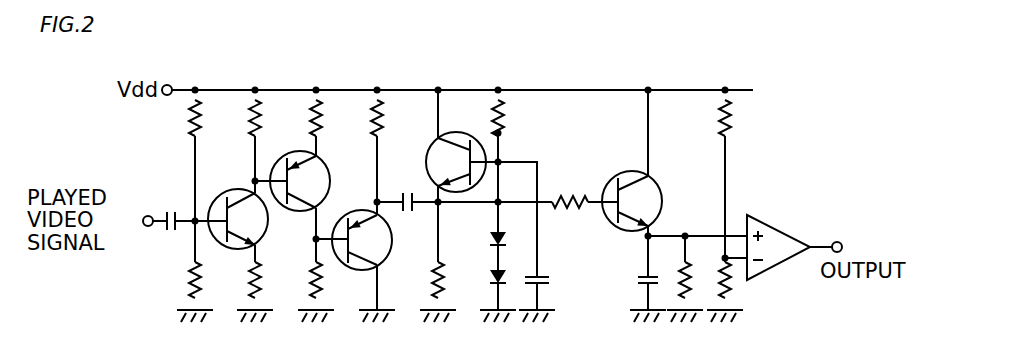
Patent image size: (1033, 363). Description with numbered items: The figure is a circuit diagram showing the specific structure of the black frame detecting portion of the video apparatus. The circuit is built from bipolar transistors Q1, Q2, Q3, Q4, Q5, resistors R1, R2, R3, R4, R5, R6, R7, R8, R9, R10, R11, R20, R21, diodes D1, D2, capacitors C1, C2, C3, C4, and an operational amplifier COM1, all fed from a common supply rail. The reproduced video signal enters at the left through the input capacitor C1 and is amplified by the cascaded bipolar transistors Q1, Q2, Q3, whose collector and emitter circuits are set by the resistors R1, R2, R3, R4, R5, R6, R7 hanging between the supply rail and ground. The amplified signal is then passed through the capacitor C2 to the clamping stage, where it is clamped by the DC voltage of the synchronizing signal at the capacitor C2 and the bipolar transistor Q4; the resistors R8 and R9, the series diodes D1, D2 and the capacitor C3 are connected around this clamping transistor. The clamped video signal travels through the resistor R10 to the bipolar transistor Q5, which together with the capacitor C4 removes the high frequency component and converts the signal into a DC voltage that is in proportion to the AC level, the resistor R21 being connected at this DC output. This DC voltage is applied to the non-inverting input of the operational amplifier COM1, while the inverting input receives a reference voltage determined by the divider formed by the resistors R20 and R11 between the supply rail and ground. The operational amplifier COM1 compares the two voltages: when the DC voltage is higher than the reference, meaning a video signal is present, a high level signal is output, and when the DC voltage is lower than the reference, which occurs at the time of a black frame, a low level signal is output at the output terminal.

The resistor R1 is at (212, 118).
The resistor R2 is at (212, 280).
The resistor R3 is at (272, 118).
The resistor R4 is at (272, 280).
The resistor R5 is at (333, 118).
The resistor R6 is at (333, 280).
The resistor R7 is at (394, 118).
The resistor R8 is at (422, 280).
The resistor R9 is at (515, 118).
The resistor R10 is at (568, 188).
The resistor R11 is at (748, 282).
The resistor R20 is at (750, 118).
The resistor R21 is at (693, 269).
The capacitor C1 is at (164, 208).
The capacitor C2 is at (409, 190).
The capacitor C3 is at (547, 265).
The capacitor C4 is at (635, 267).
The diode D1 is at (485, 227).
The diode D2 is at (485, 265).
The bipolar transistor Q1 is at (238, 207).
The bipolar transistor Q2 is at (311, 173).
The bipolar transistor Q3 is at (362, 229).
The bipolar transistor Q4 is at (462, 151).
The bipolar transistor Q5 is at (632, 190).
The operational amplifier COM1 is at (795, 243).